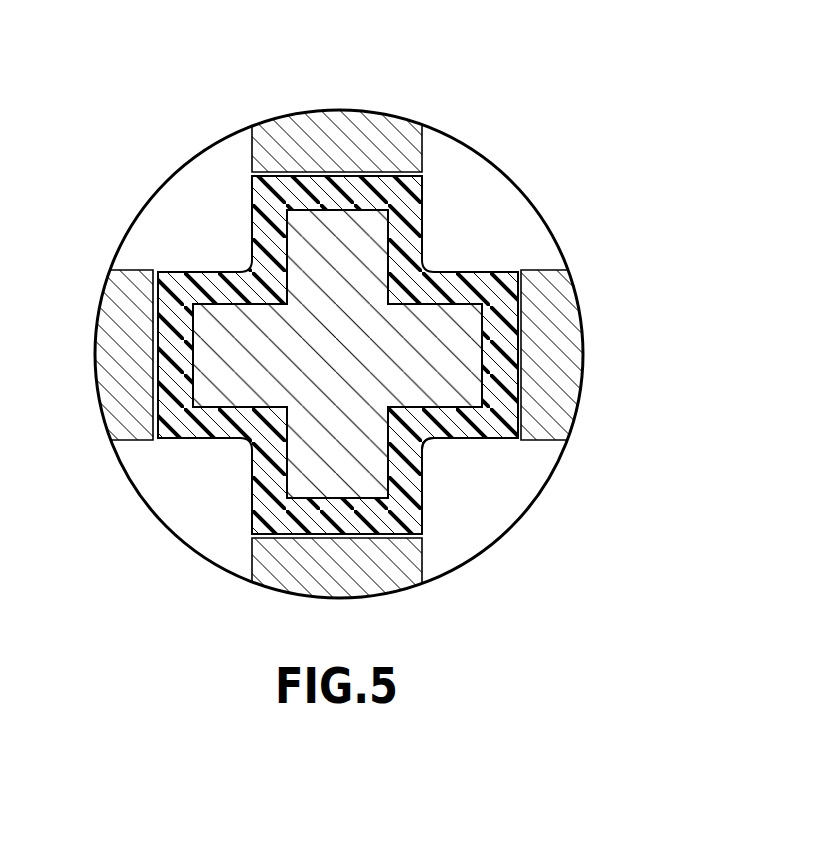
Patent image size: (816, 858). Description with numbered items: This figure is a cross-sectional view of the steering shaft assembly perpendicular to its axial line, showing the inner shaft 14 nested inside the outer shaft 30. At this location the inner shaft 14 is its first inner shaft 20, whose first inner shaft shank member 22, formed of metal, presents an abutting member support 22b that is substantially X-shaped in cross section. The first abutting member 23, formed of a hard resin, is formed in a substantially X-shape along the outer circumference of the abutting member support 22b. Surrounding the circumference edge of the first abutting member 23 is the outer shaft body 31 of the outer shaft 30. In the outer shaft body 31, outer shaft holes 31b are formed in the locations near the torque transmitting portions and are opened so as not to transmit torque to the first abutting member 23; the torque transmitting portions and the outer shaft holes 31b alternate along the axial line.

The outer shaft 30 is at (408, 429).
The outer shaft body 31 is at (583, 353).
The outer shaft hole 31b is at (218, 228).
The first inner shaft 20 is at (351, 309).
The inner shaft 14 is at (423, 200).
The first inner shaft shank member 22 is at (228, 342).
The abutting member support 22b is at (262, 342).
The first abutting member 23 is at (450, 442).